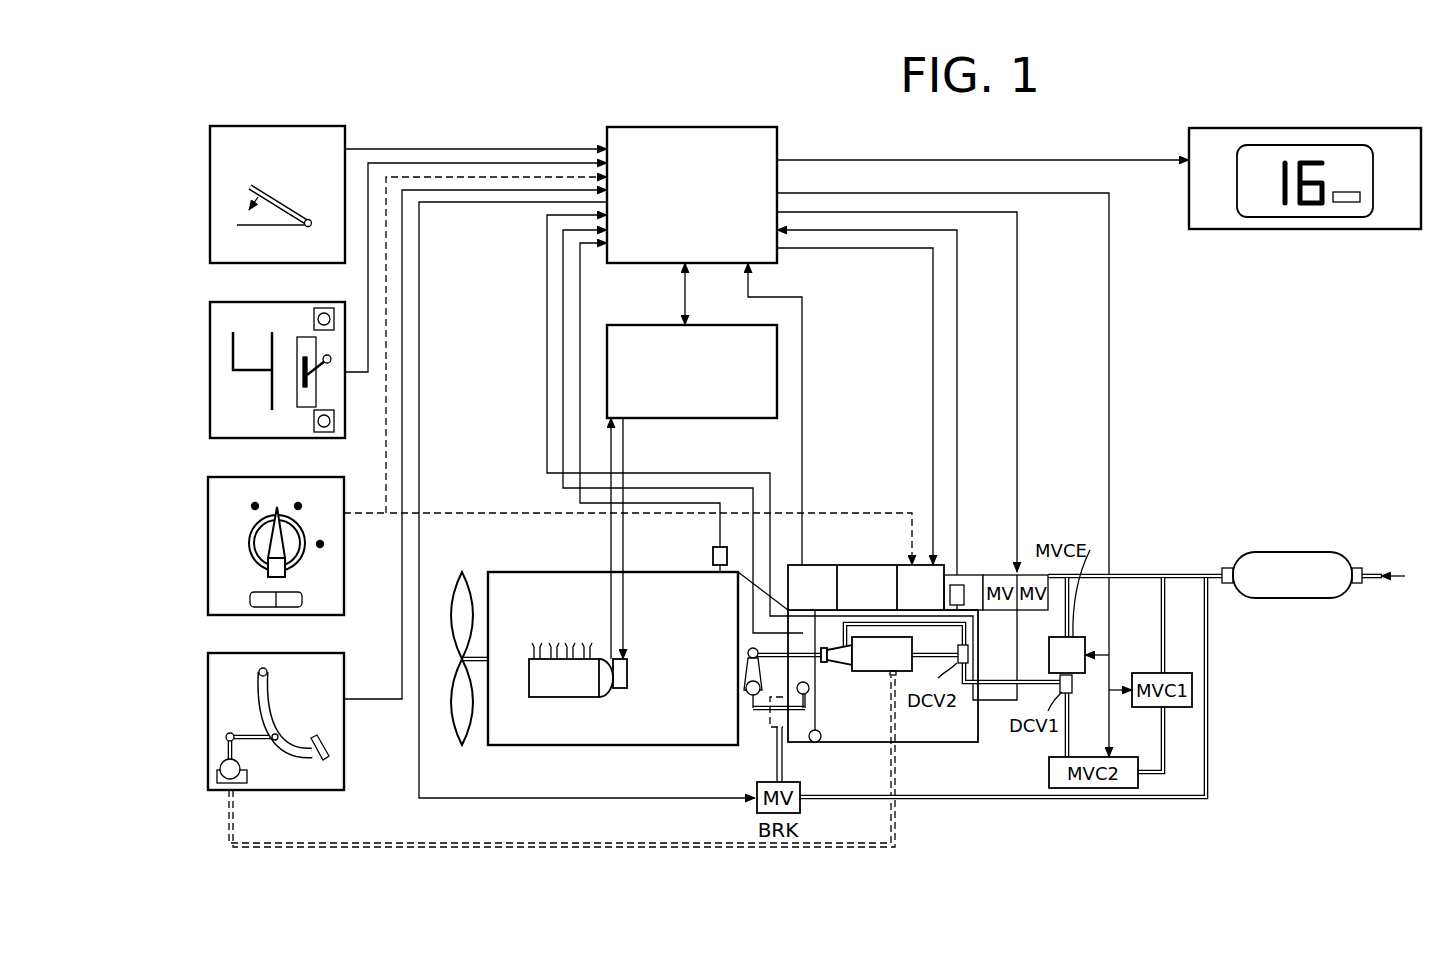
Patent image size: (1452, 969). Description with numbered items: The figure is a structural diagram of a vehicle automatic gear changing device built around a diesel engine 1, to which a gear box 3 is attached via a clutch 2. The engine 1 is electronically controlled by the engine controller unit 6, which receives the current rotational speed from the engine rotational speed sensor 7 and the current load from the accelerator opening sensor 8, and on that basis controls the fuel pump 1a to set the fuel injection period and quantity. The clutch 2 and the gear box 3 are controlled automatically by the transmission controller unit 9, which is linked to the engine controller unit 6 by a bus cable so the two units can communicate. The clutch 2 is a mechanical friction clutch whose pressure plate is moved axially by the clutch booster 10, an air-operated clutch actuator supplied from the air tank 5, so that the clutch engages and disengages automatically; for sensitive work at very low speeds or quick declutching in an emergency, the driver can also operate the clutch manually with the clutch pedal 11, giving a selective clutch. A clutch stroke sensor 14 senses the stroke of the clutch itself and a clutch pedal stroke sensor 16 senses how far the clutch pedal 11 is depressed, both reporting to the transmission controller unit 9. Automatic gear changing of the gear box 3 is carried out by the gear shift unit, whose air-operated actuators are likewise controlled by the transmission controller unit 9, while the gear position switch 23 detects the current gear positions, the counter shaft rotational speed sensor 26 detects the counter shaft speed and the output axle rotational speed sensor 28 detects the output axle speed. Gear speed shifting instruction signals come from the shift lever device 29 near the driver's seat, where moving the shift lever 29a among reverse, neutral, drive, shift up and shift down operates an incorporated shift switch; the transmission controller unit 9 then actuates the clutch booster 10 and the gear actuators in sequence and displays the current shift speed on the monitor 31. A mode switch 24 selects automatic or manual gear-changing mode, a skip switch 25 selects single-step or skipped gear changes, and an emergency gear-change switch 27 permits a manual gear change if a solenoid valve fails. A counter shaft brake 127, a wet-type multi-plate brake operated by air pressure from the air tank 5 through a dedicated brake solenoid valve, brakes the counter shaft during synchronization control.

The engine 1 is at (546, 572).
The fuel pump 1a is at (565, 694).
The clutch 2 is at (775, 726).
The gear box 3 is at (917, 742).
The air tank 5 is at (1298, 552).
The engine controller unit 6 is at (643, 325).
The engine rotational speed sensor 7 is at (713, 554).
The sensor for the degree of opening of the accelerator 8 is at (210, 190).
The transmission controller unit 9 is at (702, 126).
The clutch booster 10 is at (878, 664).
The clutch pedal 11 is at (283, 737).
The clutch stroke sensor 14 is at (808, 694).
The clutch pedal stroke sensor 16 is at (222, 768).
The gear position switch 23 is at (812, 565).
The mode switch 24 is at (333, 288).
The skip switch 25 is at (317, 433).
The counter shaft rotational speed sensor 26 is at (820, 742).
The emergency gear-change switch 27 is at (208, 553).
The output axle rotational speed sensor 28 is at (960, 587).
The shift lever device 29 is at (210, 375).
The shift lever 29a is at (328, 365).
The monitor 31 is at (1288, 229).
The counter shaft brake 127 is at (772, 718).